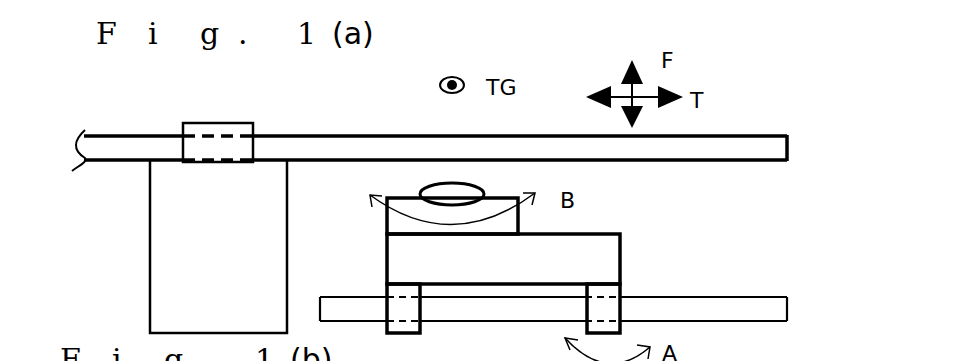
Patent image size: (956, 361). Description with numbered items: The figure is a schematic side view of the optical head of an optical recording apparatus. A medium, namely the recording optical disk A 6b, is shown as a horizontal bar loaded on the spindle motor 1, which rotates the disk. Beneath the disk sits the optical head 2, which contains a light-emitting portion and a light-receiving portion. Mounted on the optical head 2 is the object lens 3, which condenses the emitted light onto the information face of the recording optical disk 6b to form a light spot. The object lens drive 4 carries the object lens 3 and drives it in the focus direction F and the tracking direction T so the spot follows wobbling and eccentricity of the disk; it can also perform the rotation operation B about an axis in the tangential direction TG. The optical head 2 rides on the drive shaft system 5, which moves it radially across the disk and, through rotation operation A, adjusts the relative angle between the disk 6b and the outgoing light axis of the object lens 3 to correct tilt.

The spindle motor 1 is at (182, 253).
The optical head 2 is at (458, 267).
The object lens 3 is at (435, 192).
The object lens drive 4 is at (405, 208).
The drive shaft system 5 is at (758, 310).
The medium (recording optical disk A) 6b is at (745, 148).